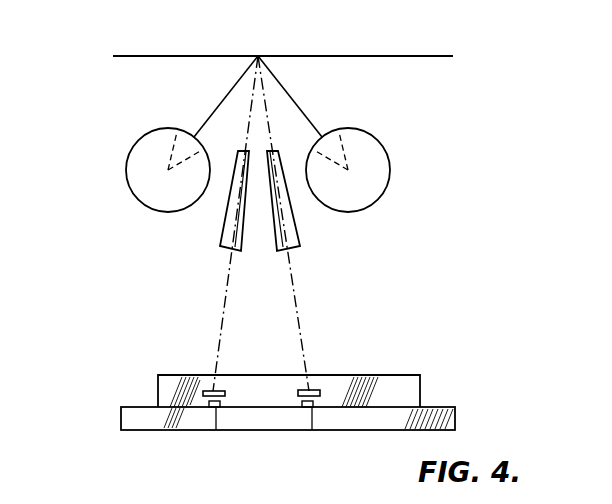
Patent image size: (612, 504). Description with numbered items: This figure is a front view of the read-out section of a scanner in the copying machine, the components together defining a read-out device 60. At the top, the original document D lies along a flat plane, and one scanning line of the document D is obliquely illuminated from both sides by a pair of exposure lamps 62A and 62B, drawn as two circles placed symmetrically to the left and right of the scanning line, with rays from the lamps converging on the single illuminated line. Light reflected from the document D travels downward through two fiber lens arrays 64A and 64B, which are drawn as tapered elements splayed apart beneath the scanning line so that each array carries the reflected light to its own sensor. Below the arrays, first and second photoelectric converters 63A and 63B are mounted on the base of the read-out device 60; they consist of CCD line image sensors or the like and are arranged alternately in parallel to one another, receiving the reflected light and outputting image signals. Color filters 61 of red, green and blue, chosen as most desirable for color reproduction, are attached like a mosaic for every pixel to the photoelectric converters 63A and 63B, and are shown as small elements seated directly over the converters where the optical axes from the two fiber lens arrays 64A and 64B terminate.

The document D is at (405, 56).
The read-out device 60 is at (455, 408).
The color filters 61 is at (218, 390).
The exposure lamp 62A is at (381, 152).
The exposure lamp 62B is at (148, 142).
The first photoelectric converter 63A is at (216, 430).
The second photoelectric converter 63B is at (312, 430).
The fiber lens array 64A is at (225, 235).
The fiber lens array 64B is at (300, 235).